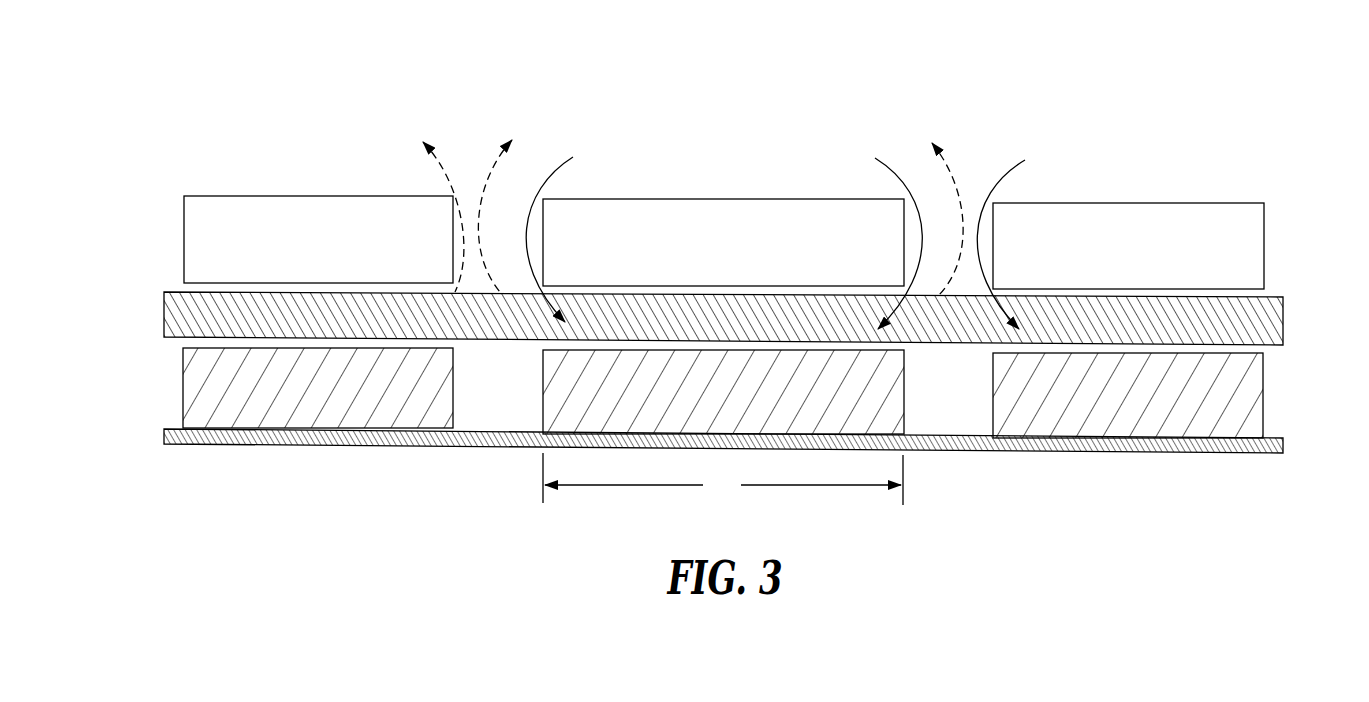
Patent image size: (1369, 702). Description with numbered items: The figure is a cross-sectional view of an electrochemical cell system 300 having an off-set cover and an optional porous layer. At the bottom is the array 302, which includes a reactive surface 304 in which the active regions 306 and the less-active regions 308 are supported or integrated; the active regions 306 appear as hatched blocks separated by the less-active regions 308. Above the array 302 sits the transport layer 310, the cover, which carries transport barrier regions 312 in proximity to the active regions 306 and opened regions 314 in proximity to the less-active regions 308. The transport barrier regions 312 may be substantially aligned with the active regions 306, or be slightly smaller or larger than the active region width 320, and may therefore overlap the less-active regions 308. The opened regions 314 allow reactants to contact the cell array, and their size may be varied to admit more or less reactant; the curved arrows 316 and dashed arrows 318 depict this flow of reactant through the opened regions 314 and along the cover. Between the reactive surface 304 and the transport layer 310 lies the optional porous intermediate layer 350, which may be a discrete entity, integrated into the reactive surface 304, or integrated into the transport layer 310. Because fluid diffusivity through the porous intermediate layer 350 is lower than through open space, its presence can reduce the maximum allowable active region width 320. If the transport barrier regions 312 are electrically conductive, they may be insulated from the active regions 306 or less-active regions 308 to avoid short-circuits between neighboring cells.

The electrochemical cell system 300 is at (1238, 64).
The array 302 is at (1297, 347).
The reactive surface 304 is at (159, 357).
The active regions 306 is at (893, 416).
The less-active regions 308 is at (485, 418).
The transport layer 310 is at (1297, 207).
The transport barrier regions 312 is at (715, 215).
The opened regions 314 is at (903, 140).
The airflow into channel 316 is at (557, 170).
The airflow out of channel 318 is at (492, 170).
The active region width 320 is at (723, 479).
The porous intermediate layer 350 is at (182, 287).